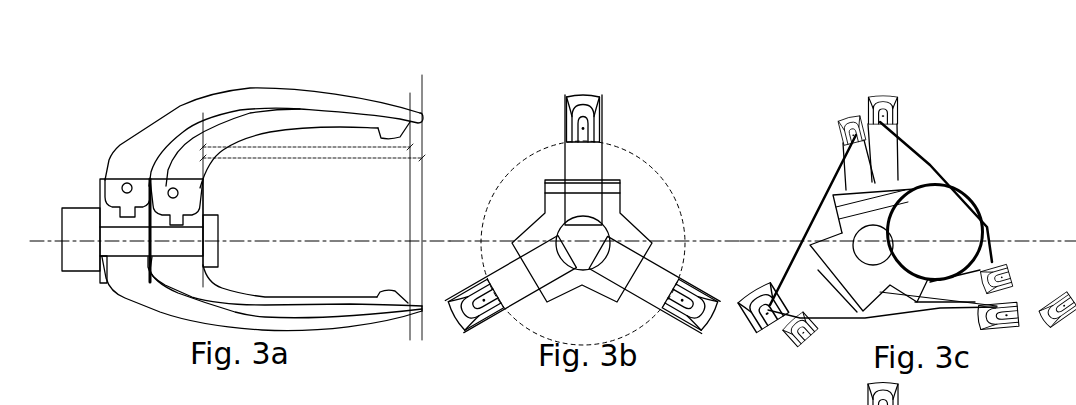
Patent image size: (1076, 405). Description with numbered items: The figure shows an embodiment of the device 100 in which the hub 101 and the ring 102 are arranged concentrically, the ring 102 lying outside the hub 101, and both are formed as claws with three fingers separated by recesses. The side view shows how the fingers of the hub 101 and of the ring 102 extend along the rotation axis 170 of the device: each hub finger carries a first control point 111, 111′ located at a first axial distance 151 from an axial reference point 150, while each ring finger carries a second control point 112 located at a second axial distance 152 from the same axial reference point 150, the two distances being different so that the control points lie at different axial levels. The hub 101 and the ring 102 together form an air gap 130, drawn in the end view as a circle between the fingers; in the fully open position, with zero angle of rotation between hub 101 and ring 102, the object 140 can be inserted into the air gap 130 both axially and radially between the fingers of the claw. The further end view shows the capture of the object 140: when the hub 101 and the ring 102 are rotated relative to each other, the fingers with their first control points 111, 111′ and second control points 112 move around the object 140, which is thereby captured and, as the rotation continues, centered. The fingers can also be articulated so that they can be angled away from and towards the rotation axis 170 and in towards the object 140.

In FIG. 3B, the device 100 is at (723, 86).
In FIG. 3A, the hub 101 is at (283, 117).
In FIG. 3A, the ring 102 is at (358, 107).
In FIG. 3C, the first control point 111 is at (983, 272).
In FIG. 3C, the first control point 111′ is at (822, 327).
In FIG. 3C, the second control point 112 is at (883, 120).
In FIG. 3B, the air gap 130 is at (583, 243).
In FIG. 3C, the object 140 is at (932, 207).
In FIG. 3A, the axial reference point 150 is at (208, 207).
In FIG. 3A, the first axial distance 151 is at (306, 216).
In FIG. 3A, the second axial distance 152 is at (312, 207).
In FIG. 3A, the rotation axis 170 is at (92, 217).